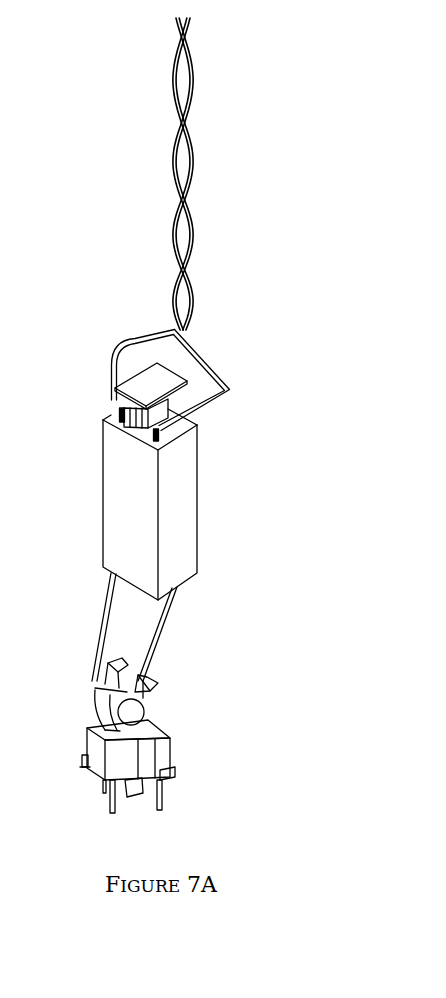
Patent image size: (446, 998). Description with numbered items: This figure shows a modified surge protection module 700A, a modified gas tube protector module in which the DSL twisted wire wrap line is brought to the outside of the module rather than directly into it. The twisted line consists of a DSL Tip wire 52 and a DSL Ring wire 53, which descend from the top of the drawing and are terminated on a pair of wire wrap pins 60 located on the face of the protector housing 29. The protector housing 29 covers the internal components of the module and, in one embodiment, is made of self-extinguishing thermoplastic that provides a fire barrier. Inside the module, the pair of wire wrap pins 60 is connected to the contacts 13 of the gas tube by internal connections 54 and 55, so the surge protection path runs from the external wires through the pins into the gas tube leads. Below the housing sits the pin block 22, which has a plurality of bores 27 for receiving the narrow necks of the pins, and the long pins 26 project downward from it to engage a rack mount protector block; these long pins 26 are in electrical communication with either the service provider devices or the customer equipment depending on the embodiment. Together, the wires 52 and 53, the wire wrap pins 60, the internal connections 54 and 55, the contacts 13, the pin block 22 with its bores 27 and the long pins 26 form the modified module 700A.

The modified surge protection module 700A is at (238, 202).
The DSL Tip wire 52 is at (212, 371).
The DSL Ring wire 53 is at (110, 348).
The wire wrap pins 60 is at (117, 412).
The protector housing 29 is at (103, 490).
The internal connection 55 is at (101, 690).
The internal connection 54 is at (160, 693).
The contacts 13 is at (97, 718).
The pin block 22 is at (163, 724).
The bores 27 is at (160, 773).
The long pins 26 is at (103, 778).